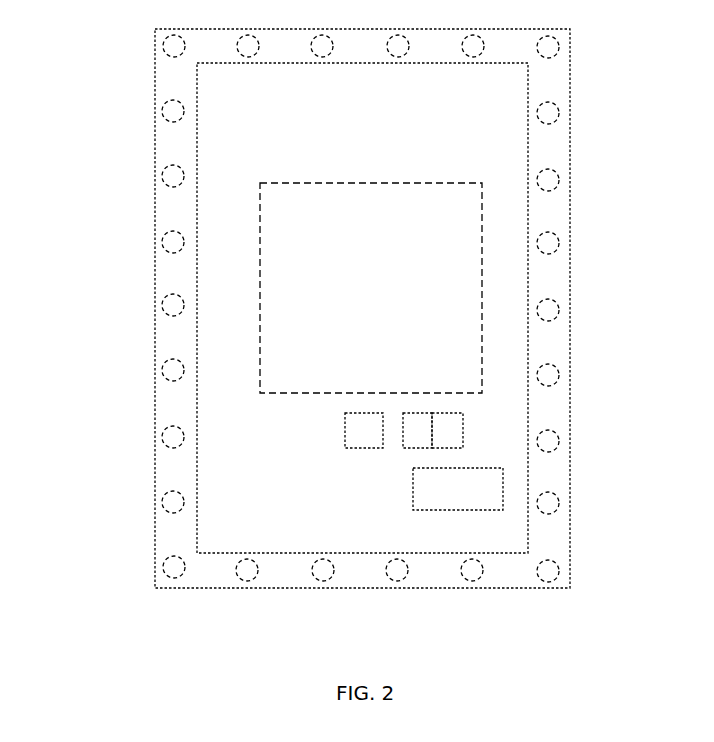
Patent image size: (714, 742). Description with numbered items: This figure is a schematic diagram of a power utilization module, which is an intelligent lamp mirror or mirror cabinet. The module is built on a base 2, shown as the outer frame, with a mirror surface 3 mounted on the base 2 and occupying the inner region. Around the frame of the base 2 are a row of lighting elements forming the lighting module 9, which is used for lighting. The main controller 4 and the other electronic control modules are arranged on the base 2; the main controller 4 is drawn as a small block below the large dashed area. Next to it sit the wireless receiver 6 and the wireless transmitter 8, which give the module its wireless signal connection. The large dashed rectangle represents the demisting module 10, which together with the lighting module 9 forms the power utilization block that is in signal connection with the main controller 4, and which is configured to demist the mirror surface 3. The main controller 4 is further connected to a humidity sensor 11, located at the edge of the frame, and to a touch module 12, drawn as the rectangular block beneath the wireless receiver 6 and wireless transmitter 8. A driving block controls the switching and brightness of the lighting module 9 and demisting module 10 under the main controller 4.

The base 2 is at (163, 537).
The mirror surface 3 is at (235, 525).
The main controller 4 is at (362, 428).
The wireless receiver 6 is at (460, 420).
The wireless transmitter 8 is at (420, 427).
The lighting module 9 is at (168, 578).
The demisting module 10 is at (440, 338).
The humidity sensor 11 is at (210, 78).
The touch module 12 is at (468, 495).